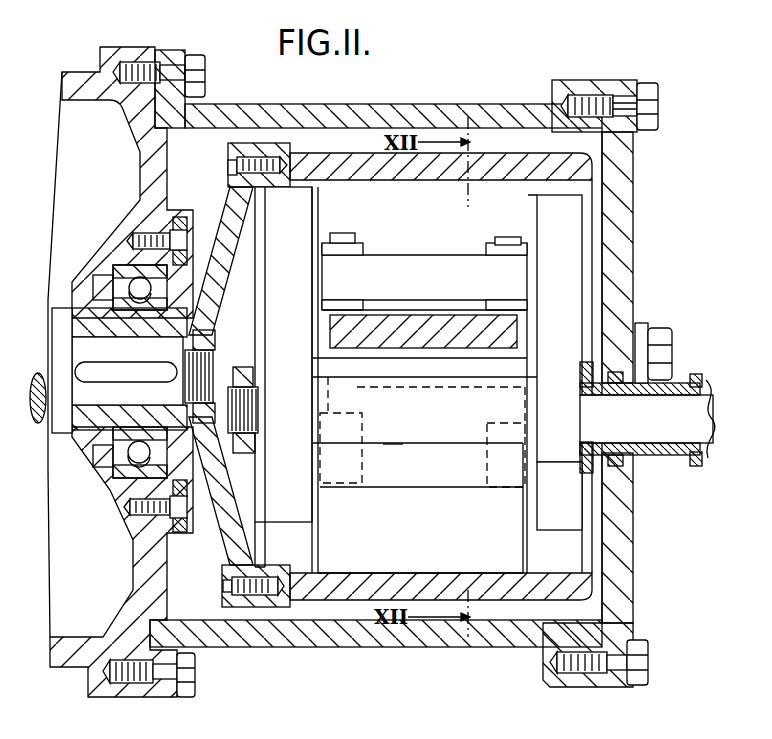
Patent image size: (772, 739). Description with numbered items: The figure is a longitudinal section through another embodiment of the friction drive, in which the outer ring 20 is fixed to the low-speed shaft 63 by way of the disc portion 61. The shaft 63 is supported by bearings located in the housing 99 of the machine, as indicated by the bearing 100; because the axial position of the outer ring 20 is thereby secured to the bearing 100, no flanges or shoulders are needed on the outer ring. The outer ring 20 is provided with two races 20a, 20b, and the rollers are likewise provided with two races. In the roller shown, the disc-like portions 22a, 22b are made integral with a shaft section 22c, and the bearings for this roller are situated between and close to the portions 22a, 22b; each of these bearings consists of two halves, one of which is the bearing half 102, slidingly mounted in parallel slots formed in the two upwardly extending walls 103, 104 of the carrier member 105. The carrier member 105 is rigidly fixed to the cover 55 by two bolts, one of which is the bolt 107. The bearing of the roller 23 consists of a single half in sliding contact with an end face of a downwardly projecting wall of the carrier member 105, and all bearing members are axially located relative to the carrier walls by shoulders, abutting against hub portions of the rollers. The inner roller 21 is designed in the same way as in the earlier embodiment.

The housing 99 is at (78, 74).
The bearing 100 is at (125, 264).
The low-speed shaft 63 is at (42, 424).
The disc portion 61 is at (238, 194).
The outer ring 20 is at (358, 162).
The race 20a is at (291, 602).
The race 20b is at (550, 576).
The disc-like portion 22a is at (293, 202).
The disc-like portion 22b is at (562, 214).
The shaft section 22c is at (477, 268).
The roller 23 is at (563, 503).
The cover 55 is at (624, 182).
The bearing half 102 is at (367, 247).
The upwardly extending wall 103 is at (347, 235).
The upwardly extending wall 104 is at (512, 242).
The carrier member 105 is at (500, 340).
The bolt 107 is at (670, 373).
The inner roller 21 is at (424, 380).